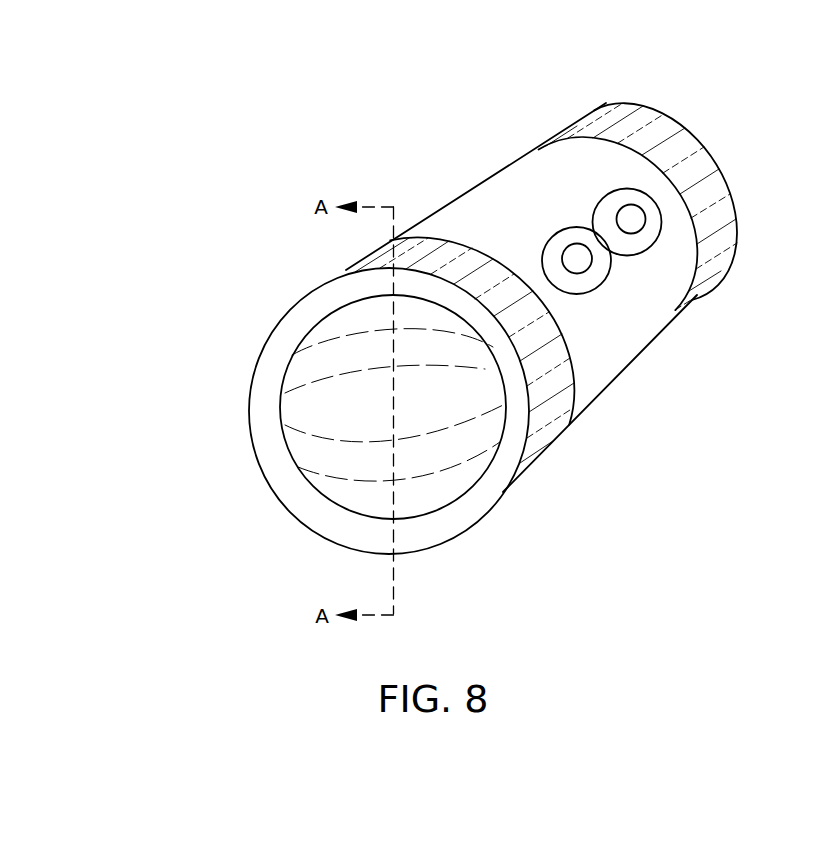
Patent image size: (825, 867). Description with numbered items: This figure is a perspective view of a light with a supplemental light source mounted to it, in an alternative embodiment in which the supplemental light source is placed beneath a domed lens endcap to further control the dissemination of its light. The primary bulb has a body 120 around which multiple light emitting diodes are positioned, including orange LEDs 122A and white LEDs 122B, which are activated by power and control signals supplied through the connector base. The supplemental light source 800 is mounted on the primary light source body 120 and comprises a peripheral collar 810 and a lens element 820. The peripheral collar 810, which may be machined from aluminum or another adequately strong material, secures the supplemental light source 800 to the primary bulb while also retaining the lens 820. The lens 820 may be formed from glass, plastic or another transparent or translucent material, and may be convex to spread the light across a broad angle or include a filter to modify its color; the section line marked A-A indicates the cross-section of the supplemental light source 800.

The body 120 is at (547, 279).
The orange LEDs 122A is at (613, 210).
The white LEDs 122B is at (563, 253).
The supplemental light source 800 is at (378, 395).
The peripheral collar 810 is at (346, 270).
The lens element 820 is at (360, 403).